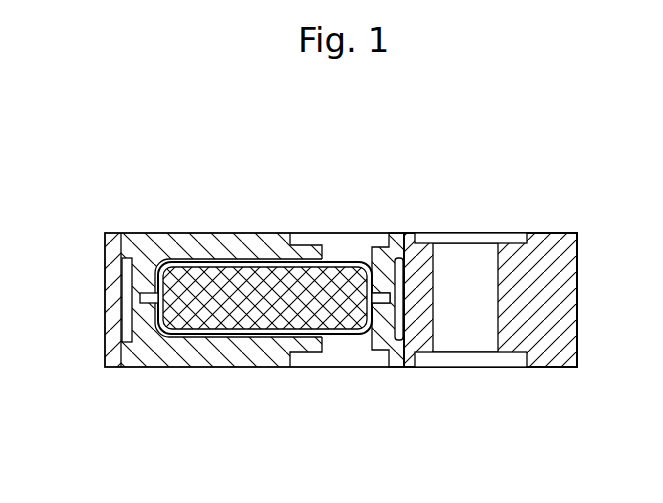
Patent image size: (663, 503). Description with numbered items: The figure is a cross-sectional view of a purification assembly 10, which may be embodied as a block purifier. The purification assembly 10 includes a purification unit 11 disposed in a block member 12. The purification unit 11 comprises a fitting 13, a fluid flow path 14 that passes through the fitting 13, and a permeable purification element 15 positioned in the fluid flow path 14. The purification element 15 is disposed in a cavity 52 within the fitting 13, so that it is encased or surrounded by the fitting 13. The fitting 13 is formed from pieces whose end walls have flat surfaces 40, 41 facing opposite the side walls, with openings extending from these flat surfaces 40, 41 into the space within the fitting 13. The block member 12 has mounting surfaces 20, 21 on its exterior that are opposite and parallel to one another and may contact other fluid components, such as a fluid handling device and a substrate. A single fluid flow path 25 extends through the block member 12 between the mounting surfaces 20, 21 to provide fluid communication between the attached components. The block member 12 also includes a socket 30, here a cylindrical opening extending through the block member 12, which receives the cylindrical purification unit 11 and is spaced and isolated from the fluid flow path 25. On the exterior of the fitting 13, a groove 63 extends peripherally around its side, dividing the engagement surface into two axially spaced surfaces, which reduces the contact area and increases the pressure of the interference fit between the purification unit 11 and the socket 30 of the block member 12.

The purification assembly 10 is at (409, 221).
The purification unit 11 is at (143, 358).
The block member 12 is at (540, 295).
The fitting 13 is at (148, 258).
The fluid flow path 14 is at (337, 340).
The permeable purification element 15 is at (248, 313).
The mounting surface 20 is at (543, 232).
The mounting surface 21 is at (542, 367).
The fluid flow path 25 is at (483, 342).
The socket 30 is at (193, 233).
The flat surface of end wall 40 is at (220, 233).
The flat surface of end wall 41 is at (177, 367).
The cavity 52 is at (175, 267).
The groove 63 is at (128, 303).